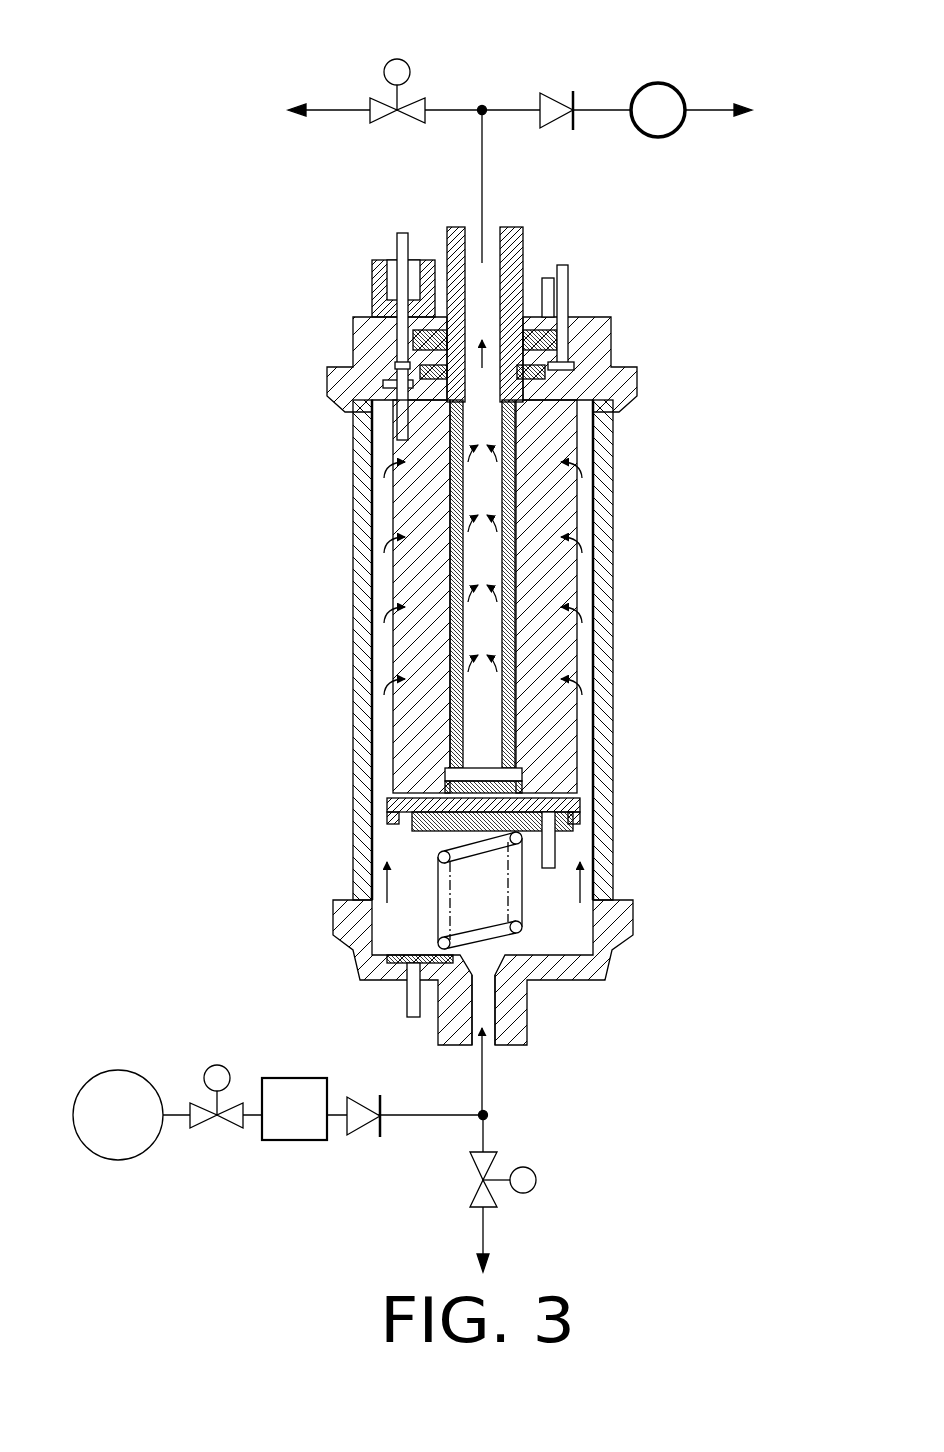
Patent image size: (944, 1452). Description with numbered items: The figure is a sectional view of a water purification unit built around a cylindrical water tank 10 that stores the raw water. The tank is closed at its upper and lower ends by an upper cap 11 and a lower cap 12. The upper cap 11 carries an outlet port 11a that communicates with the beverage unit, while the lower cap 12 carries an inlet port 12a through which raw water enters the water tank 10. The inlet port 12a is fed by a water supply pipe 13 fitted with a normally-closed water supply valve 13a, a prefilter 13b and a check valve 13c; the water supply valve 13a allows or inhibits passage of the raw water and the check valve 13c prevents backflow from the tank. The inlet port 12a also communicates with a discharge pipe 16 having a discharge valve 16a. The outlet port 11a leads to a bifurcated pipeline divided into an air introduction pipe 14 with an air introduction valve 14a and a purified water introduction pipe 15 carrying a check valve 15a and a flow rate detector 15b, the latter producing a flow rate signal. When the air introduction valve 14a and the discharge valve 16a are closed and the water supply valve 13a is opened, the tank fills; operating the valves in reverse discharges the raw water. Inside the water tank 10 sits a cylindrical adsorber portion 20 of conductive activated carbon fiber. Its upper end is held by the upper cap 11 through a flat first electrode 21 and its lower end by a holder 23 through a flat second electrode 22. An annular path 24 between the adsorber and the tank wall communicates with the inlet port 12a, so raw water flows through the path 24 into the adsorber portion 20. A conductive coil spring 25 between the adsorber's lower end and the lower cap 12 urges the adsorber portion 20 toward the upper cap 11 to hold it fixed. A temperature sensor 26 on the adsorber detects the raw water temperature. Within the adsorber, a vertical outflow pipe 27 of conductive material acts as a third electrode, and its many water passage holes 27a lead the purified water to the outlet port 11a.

The water tank 10 is at (365, 797).
The upper cap 11 is at (353, 335).
The outlet port 11a is at (500, 228).
The lower cap 12 is at (358, 962).
The inlet port 12a is at (490, 1017).
The water supply pipe 13 is at (420, 1113).
The water supply valve 13a is at (219, 1064).
The prefilter 13b is at (289, 1088).
The check valve 13c is at (363, 1094).
The air introduction pipe 14 is at (340, 113).
The air introduction valve 14a is at (393, 58).
The purified water introduction pipe 15 is at (604, 113).
The check valve 15a is at (545, 95).
The flow rate detector 15b is at (655, 83).
The discharge pipe 16 is at (483, 1140).
The discharge valve 16a is at (537, 1180).
The adsorber portion 20 is at (395, 578).
The first electrode 21 is at (567, 363).
The second electrode 22 is at (578, 803).
The holder 23 is at (578, 822).
The annular path 24 is at (373, 503).
The conductive coil spring 25 is at (460, 952).
The temperature sensor 26 is at (395, 277).
The outflow pipe 27 is at (455, 652).
The water passage holes 27a is at (503, 677).